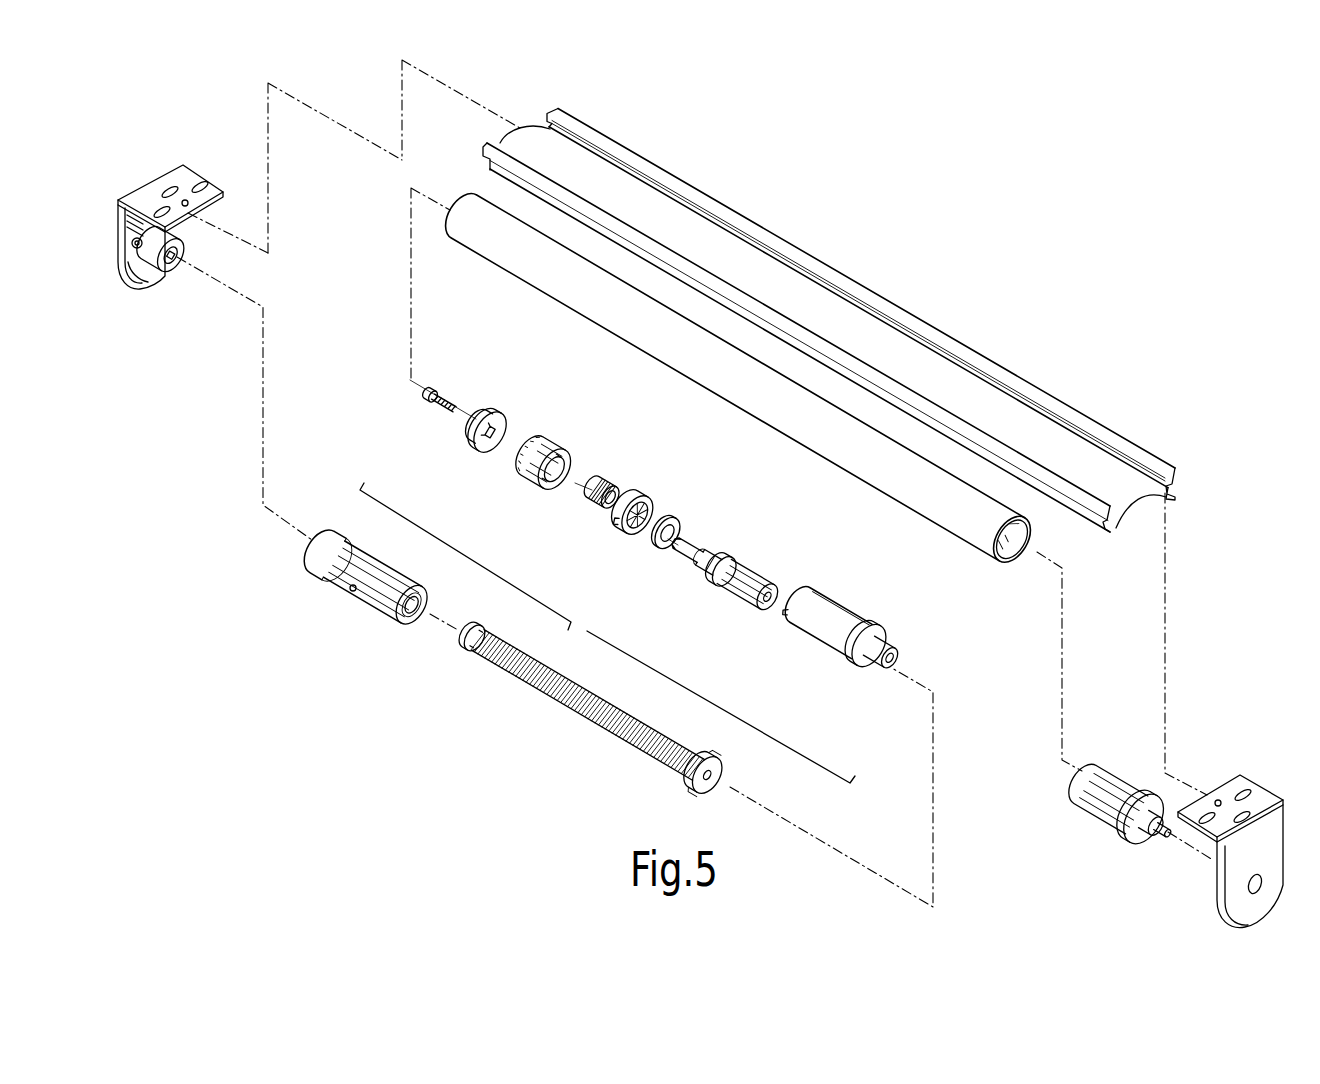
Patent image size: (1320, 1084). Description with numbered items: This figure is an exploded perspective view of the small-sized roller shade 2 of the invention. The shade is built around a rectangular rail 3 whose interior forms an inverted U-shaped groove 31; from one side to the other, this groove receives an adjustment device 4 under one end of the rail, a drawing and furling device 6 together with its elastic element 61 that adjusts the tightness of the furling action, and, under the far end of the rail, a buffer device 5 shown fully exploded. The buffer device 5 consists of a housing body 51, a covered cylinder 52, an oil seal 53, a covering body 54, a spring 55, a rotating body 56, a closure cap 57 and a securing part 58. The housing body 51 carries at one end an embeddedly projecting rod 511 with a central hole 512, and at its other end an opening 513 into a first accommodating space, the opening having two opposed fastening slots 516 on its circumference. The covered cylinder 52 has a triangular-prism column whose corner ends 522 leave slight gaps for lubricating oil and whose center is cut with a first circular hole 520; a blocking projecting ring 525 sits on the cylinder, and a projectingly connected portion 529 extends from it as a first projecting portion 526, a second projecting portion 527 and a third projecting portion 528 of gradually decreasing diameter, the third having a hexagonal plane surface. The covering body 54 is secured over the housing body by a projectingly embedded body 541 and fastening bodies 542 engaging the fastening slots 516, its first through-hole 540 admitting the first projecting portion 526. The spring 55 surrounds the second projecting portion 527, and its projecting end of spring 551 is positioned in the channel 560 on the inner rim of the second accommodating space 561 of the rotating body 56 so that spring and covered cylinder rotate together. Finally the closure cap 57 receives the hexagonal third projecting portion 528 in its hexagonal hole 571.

The small-sized roller shade 2 is at (853, 321).
The rail 3 is at (885, 318).
The inverted U-shaped groove 31 is at (1167, 498).
The adjustment device 4 is at (357, 608).
The buffer device 5 is at (607, 633).
The housing body 51 is at (851, 640).
The embeddedly projecting rod 511 is at (873, 673).
The hole 512 is at (886, 670).
The opening 513 is at (813, 583).
The fastening slots 516 is at (787, 630).
The covered cylinder 52 is at (744, 567).
The first circular hole 520 is at (773, 590).
The corner ends 522 is at (780, 534).
The blocking projecting ring 525 is at (736, 560).
The first projecting portion 526 is at (721, 579).
The second projecting portion 527 is at (705, 548).
The third projecting portion 528 is at (680, 558).
The projectingly connected portion 529 is at (685, 576).
The oil seal 53 is at (675, 527).
The covering body 54 is at (671, 514).
The first through-hole 540 is at (653, 515).
The projectingly embedded body 541 is at (646, 507).
The fastening body 542 is at (618, 522).
The spring 55 is at (580, 492).
The projecting end of spring 551 is at (588, 494).
The rotating body 56 is at (545, 472).
The channel 560 is at (552, 437).
The second accommodating space 561 is at (555, 486).
The closure cap 57 is at (479, 467).
The hexagonal hole 571 is at (493, 440).
The securing part 58 is at (429, 412).
The drawing and furling device 6 is at (982, 569).
The elastic element 61 is at (567, 710).